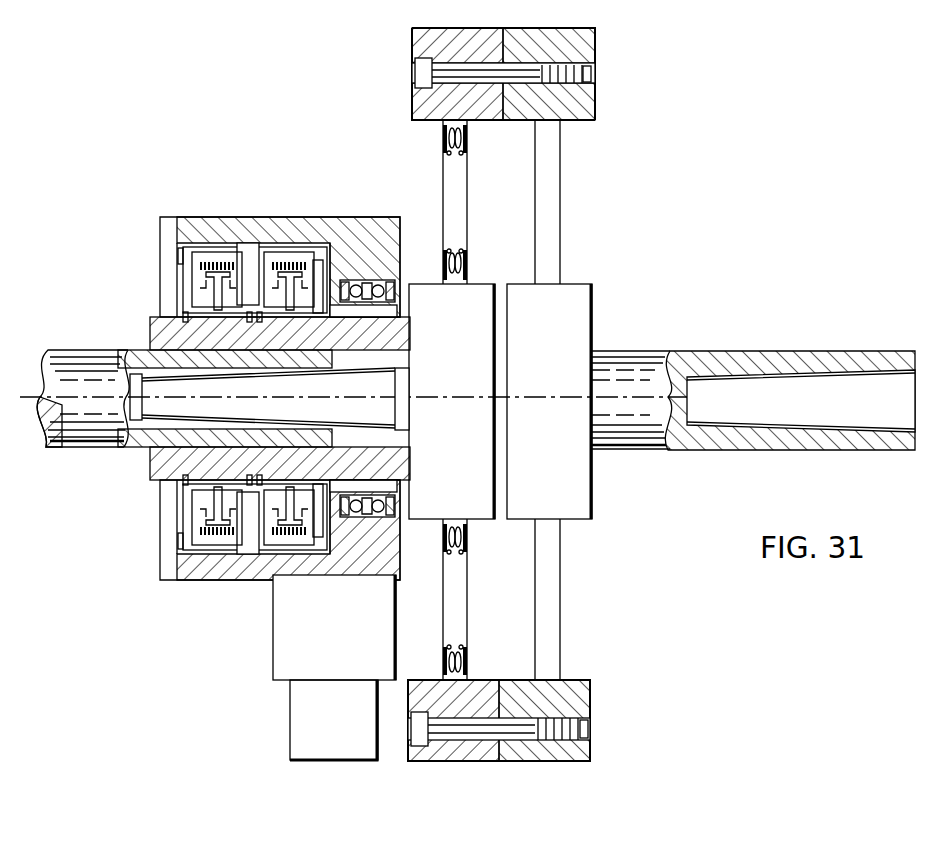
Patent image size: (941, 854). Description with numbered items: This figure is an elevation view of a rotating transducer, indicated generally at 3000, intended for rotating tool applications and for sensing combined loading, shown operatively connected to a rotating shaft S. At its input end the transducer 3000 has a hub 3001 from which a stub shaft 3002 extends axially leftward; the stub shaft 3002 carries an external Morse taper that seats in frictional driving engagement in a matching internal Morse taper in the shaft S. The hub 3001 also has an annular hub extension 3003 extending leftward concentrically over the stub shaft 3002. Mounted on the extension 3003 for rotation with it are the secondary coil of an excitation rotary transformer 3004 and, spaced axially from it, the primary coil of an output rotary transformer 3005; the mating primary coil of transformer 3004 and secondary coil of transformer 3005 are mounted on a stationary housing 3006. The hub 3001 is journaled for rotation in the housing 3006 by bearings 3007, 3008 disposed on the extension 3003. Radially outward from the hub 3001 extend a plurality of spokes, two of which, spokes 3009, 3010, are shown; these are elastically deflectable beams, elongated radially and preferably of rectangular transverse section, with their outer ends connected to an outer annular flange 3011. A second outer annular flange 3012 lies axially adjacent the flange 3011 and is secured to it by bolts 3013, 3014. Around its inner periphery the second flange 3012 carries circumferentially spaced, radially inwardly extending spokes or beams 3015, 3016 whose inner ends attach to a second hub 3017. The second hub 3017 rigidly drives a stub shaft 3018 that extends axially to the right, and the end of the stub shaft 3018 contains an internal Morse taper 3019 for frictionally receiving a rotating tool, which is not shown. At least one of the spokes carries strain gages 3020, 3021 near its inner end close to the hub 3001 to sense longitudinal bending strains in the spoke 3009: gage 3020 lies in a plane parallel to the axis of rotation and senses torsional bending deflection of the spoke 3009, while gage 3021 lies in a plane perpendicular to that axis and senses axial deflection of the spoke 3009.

The transducer 3000 is at (412, 202).
The hub 3001 is at (473, 405).
The stub shaft 3002 is at (365, 410).
The annular hub extension 3003 is at (152, 340).
The excitation rotary transformer 3004 is at (190, 288).
The output rotary transformer 3005 is at (280, 270).
The stationary housing 3006 is at (205, 217).
The bearing 3007 is at (352, 282).
The bearing 3008 is at (372, 522).
The spoke 3009 is at (503, 172).
The spoke 3010 is at (467, 575).
The outer annular flange 3011 is at (412, 108).
The second outer annular flange 3012 is at (596, 56).
The bolt 3013 is at (412, 70).
The bolt 3014 is at (462, 722).
The spoke 3015 is at (562, 185).
The spoke 3016 is at (560, 590).
The second hub 3017 is at (568, 405).
The stub shaft 3018 is at (630, 351).
The internal Morse taper 3019 is at (806, 376).
The strain gage 3020 is at (450, 250).
The strain gage 3021 is at (468, 266).
The rotating shaft S is at (85, 448).